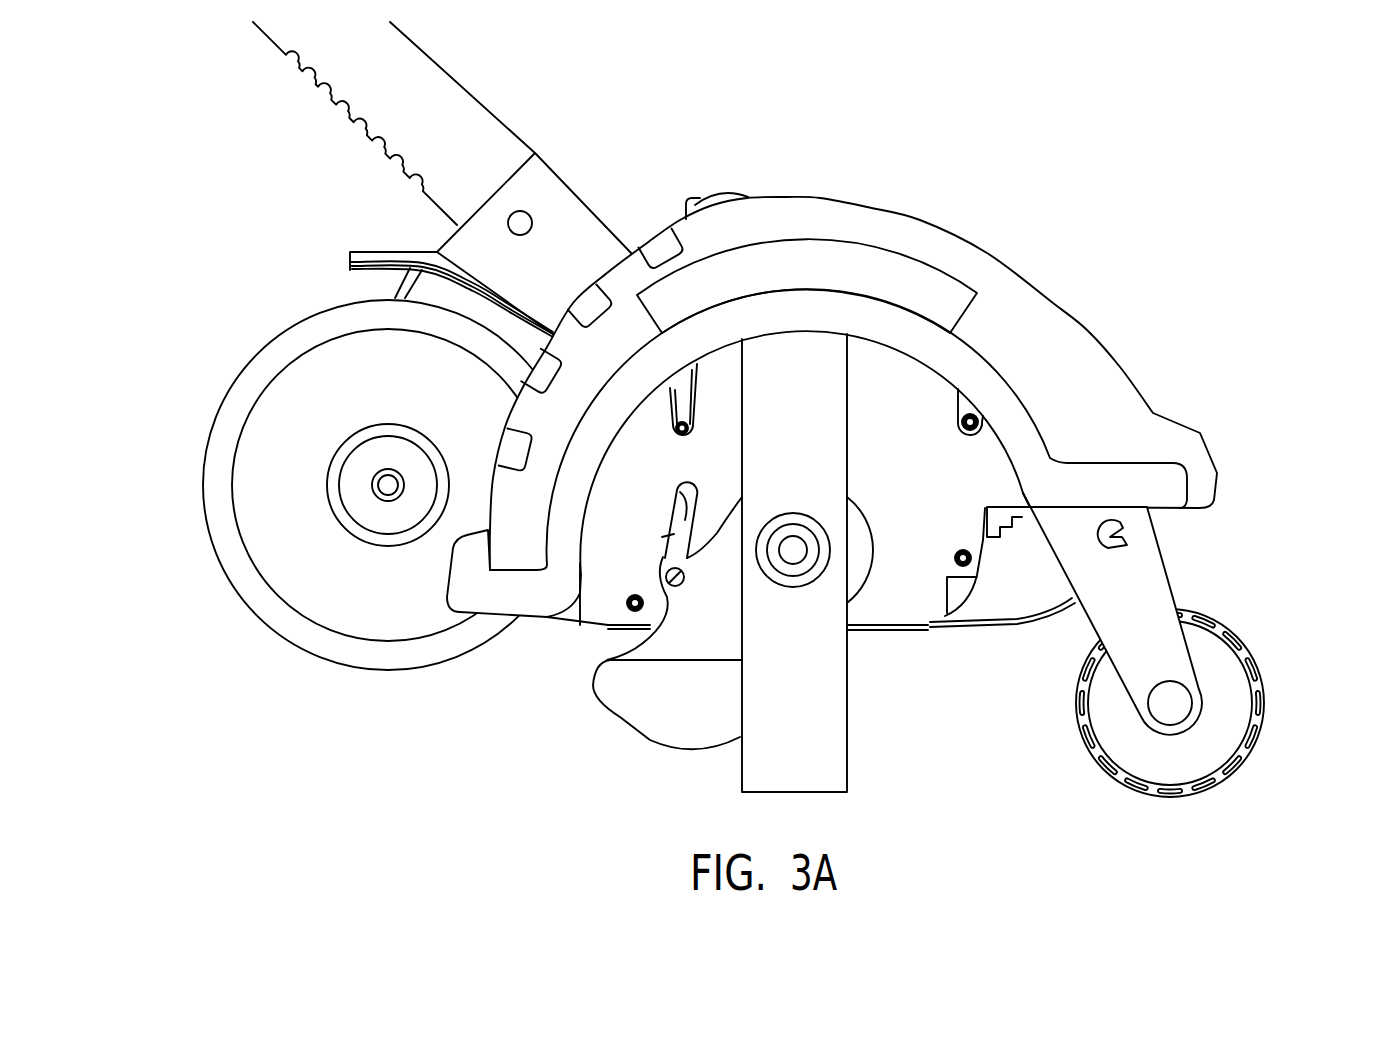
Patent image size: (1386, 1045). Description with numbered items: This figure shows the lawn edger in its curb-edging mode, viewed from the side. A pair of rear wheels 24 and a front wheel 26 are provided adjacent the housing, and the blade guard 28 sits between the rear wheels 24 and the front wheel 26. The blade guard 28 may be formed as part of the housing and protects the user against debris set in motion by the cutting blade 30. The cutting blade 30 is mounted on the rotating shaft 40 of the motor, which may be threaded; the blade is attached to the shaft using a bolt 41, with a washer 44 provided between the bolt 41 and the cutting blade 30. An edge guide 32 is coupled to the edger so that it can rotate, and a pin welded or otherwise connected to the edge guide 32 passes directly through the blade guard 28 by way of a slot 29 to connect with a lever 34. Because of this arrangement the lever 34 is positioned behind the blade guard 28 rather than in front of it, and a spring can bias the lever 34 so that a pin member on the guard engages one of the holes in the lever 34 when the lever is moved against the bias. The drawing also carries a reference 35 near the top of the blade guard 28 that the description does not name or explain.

The rear wheel 24 is at (286, 640).
The front wheel 26 is at (1263, 717).
The blade guard 28 is at (1083, 323).
The slot 29 is at (672, 537).
The cutting blade 30 is at (820, 757).
The edge guide 32 is at (647, 740).
The lever 34 is at (683, 214).
The guard tab 35 is at (718, 193).
The rotating shaft 40 is at (790, 560).
The bolt 41 is at (797, 575).
The washer 44 is at (812, 583).